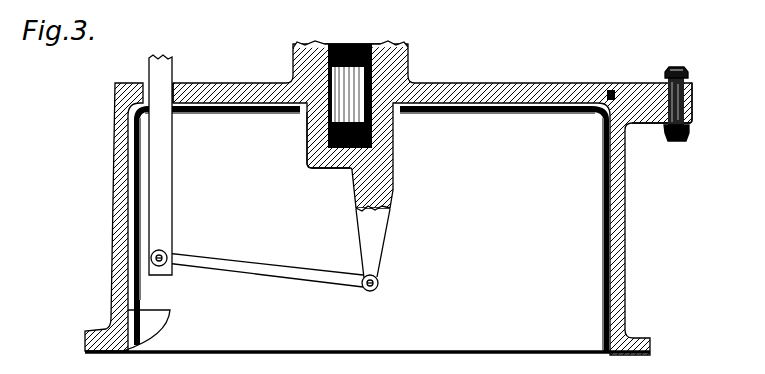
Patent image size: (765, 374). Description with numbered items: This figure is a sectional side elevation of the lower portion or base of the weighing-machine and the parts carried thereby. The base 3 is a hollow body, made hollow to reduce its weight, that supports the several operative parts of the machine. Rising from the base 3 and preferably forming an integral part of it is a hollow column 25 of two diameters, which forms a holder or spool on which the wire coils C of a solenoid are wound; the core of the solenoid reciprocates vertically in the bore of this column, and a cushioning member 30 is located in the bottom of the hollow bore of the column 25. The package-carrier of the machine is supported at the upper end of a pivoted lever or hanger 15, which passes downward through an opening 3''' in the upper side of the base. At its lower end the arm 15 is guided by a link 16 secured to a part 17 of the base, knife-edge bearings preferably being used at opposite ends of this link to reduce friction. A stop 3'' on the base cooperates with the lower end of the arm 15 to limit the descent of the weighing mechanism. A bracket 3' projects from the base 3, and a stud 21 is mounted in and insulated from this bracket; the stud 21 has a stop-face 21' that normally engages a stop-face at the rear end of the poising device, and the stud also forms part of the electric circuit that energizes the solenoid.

The base 3 is at (388, 199).
The bracket 3' is at (662, 115).
The stop 3'' is at (161, 330).
The opening 3''' is at (191, 79).
The pivoted lever or hanger 15 is at (163, 168).
The link 16 is at (247, 268).
The part of the base 17 is at (378, 234).
The stud 21 is at (690, 97).
The stop-face 21' is at (679, 57).
The column 25 is at (409, 58).
The cushioning member 30 is at (347, 150).
The wire coils of the solenoid C is at (350, 96).